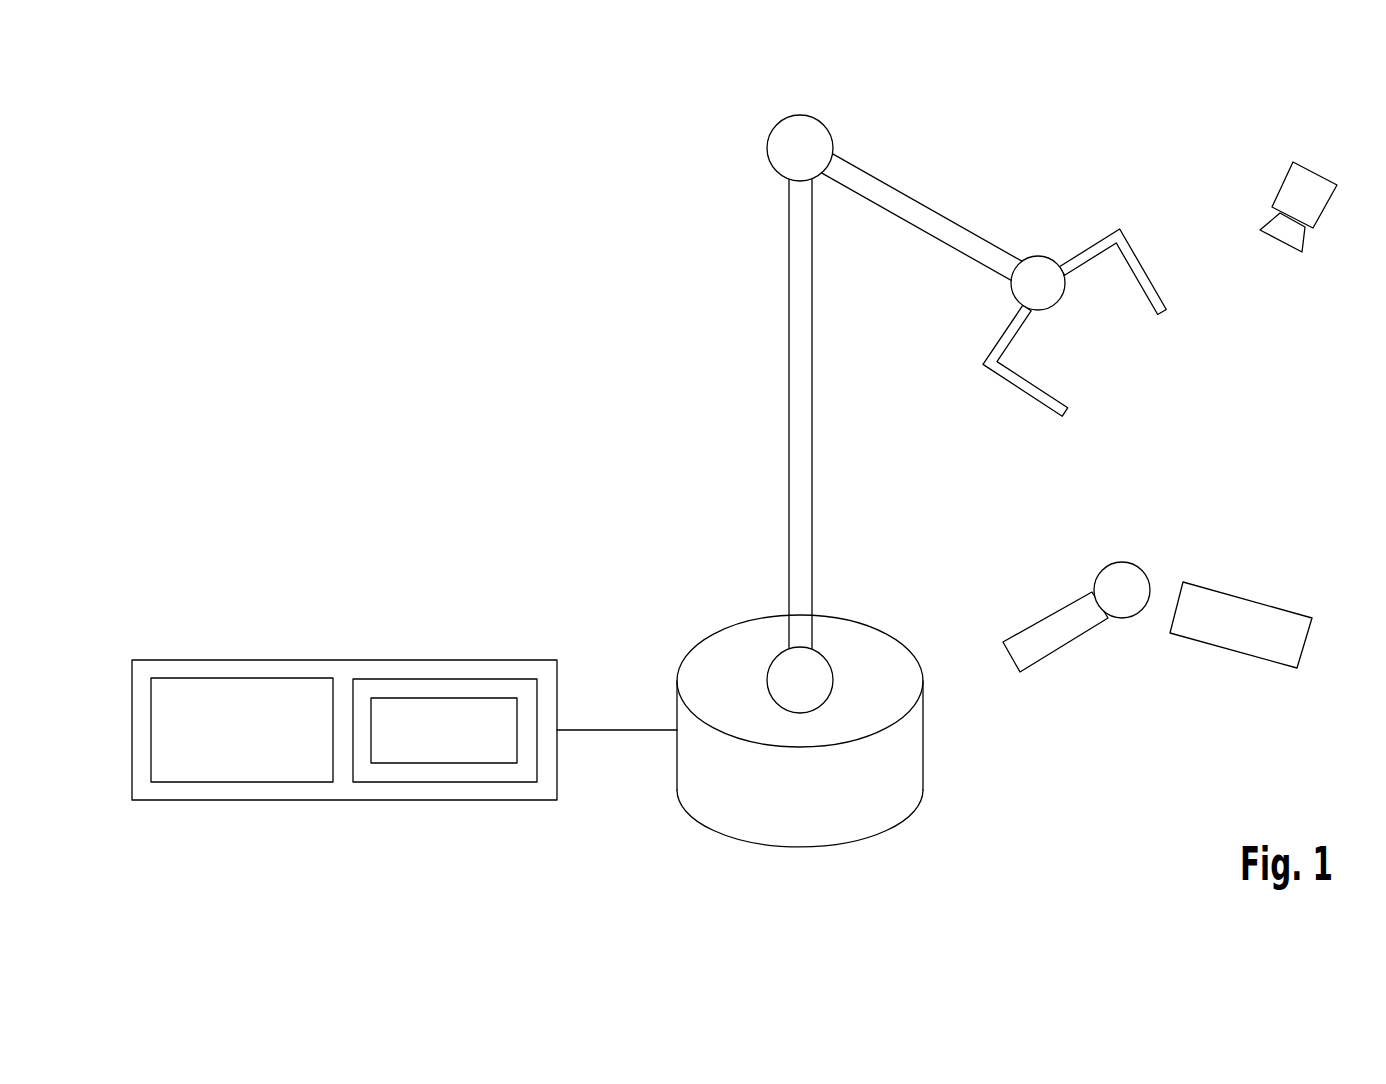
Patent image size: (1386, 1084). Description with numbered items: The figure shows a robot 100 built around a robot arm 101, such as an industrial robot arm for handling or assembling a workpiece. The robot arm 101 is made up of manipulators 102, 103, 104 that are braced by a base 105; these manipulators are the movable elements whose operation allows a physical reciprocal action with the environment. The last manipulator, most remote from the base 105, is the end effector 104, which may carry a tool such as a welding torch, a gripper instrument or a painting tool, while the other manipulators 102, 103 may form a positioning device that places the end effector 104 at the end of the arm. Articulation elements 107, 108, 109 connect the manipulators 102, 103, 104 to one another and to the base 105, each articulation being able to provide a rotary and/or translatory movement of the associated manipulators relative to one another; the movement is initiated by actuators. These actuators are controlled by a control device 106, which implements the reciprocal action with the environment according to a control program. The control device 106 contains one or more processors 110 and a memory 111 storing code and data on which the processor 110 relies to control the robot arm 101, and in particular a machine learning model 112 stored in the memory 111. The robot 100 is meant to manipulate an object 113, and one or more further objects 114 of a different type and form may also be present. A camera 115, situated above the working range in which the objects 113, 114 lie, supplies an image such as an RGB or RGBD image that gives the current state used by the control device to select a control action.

The robot 100 is at (734, 478).
The robot arm 101 is at (945, 481).
The manipulator 102 is at (797, 456).
The manipulator 103 is at (927, 218).
The end effector 104 is at (1145, 273).
The base 105 is at (908, 748).
The control device 106 is at (404, 699).
The articulation element 107 is at (785, 667).
The articulation element 108 is at (775, 150).
The articulation element 109 is at (1030, 265).
The processor 110 is at (265, 678).
The memory 111 is at (445, 690).
The machine learning model 112 is at (478, 698).
The object 113 is at (1075, 642).
The further object 114 is at (1233, 653).
The camera 115 is at (1285, 183).